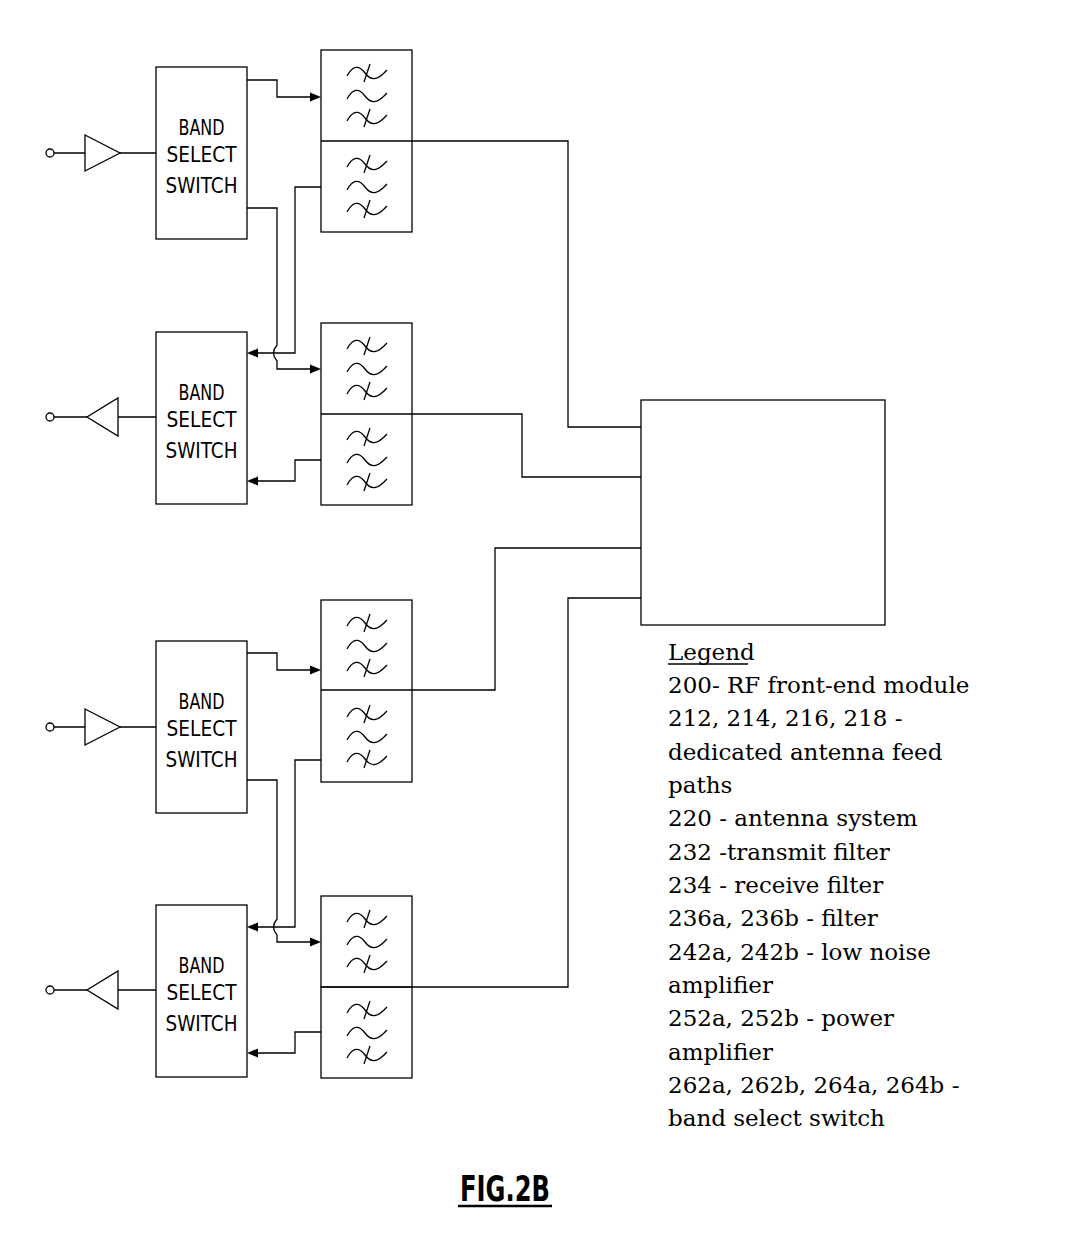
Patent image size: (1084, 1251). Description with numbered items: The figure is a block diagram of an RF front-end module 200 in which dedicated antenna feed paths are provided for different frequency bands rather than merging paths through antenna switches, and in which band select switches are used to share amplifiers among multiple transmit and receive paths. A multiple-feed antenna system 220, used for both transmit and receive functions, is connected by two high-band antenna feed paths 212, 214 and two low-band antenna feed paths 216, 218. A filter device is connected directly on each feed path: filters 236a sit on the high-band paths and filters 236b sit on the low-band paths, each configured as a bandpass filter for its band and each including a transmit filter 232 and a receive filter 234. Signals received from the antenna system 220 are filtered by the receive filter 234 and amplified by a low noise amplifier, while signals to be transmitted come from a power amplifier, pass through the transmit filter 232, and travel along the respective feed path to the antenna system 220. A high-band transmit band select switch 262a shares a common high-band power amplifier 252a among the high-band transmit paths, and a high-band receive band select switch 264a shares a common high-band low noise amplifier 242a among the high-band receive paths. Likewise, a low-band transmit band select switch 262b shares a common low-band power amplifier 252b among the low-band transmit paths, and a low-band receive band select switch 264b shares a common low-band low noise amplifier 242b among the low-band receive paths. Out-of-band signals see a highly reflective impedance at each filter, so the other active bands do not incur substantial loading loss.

The RF front-end module 200 is at (812, 123).
The dedicated antenna feed path 212 is at (578, 218).
The dedicated antenna feed path 214 is at (486, 400).
The dedicated antenna feed path 216 is at (472, 702).
The dedicated antenna feed path 218 is at (578, 853).
The antenna system 220 is at (784, 390).
The transmit filter 232 is at (412, 916).
The receive filter 234 is at (322, 1055).
The filter 236a is at (420, 72).
The filter 236b is at (390, 854).
The low noise amplifier 242a is at (107, 437).
The low noise amplifier 242b is at (107, 1010).
The power amplifier 252a is at (97, 135).
The power amplifier 252b is at (97, 709).
The band select switch 262a is at (186, 67).
The band select switch 262b is at (186, 641).
The band select switch 264a is at (186, 332).
The band select switch 264b is at (186, 905).